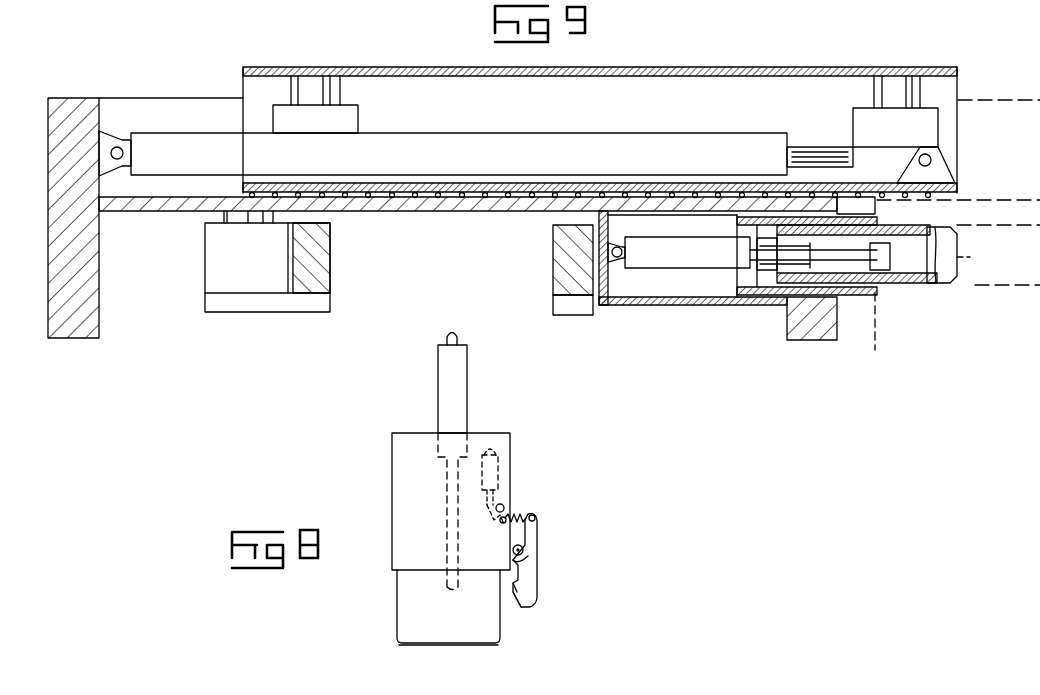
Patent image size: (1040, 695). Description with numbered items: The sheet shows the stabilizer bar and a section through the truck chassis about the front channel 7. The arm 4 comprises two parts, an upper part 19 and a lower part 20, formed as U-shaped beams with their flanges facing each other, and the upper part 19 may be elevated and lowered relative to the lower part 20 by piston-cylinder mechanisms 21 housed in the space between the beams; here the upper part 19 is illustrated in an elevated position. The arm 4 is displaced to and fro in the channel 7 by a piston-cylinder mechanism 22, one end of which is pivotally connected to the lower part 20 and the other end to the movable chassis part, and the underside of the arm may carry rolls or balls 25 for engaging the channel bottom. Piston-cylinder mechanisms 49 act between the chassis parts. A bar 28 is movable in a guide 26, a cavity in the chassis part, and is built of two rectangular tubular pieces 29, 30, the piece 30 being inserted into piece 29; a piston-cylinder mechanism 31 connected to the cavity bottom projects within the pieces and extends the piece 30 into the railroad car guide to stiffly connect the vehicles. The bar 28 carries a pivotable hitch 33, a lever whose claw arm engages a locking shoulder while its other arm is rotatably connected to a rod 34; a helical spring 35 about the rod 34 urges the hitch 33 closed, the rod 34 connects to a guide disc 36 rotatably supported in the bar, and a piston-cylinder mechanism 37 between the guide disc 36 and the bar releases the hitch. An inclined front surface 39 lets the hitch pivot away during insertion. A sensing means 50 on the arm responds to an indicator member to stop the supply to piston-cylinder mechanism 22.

In FIG. 9, the arm 4 is at (600, 105).
In FIG. 9, the front channel 7 is at (172, 120).
In FIG. 9, the upper part 19 is at (811, 67).
In FIG. 9, the lower part 20 is at (814, 182).
In FIG. 9, the piston-cylinder mechanisms 21 is at (352, 118).
In FIG. 9, the piston-cylinder mechanism 22 is at (552, 141).
In FIG. 9, the rolls or balls 25 is at (905, 203).
In FIG. 9, the guide 26 is at (708, 290).
In FIG. 9, the bar 28 is at (962, 257).
In FIG. 8, the bar 28 is at (392, 594).
In FIG. 9, the tubular piece 29 is at (853, 297).
In FIG. 9, the tubular piece 30 is at (922, 284).
In FIG. 9, the piston-cylinder mechanism 31 is at (673, 258).
In FIG. 8, the piston-cylinder mechanism 31 is at (460, 411).
In FIG. 8, the hitch 33 is at (538, 570).
In FIG. 8, the rod 34 is at (503, 525).
In FIG. 8, the helical spring 35 is at (526, 518).
In FIG. 8, the guide disc 36 is at (503, 509).
In FIG. 8, the piston-cylinder mechanism 37 is at (493, 472).
In FIG. 8, the inclined front surface 39 is at (518, 605).
In FIG. 9, the piston-cylinder mechanisms 49 is at (214, 270).
In FIG. 9, the sensing means 50 is at (566, 190).